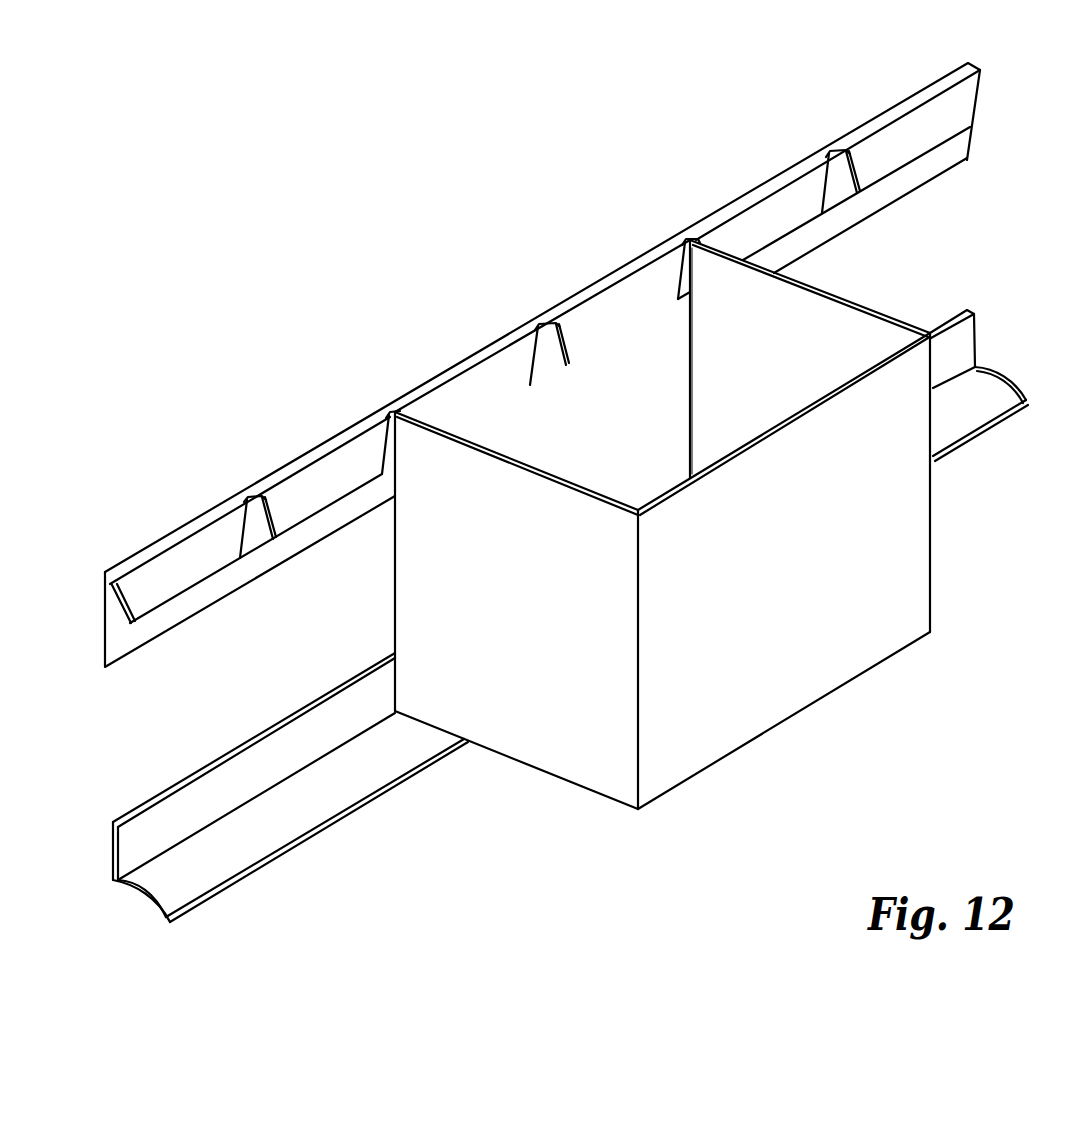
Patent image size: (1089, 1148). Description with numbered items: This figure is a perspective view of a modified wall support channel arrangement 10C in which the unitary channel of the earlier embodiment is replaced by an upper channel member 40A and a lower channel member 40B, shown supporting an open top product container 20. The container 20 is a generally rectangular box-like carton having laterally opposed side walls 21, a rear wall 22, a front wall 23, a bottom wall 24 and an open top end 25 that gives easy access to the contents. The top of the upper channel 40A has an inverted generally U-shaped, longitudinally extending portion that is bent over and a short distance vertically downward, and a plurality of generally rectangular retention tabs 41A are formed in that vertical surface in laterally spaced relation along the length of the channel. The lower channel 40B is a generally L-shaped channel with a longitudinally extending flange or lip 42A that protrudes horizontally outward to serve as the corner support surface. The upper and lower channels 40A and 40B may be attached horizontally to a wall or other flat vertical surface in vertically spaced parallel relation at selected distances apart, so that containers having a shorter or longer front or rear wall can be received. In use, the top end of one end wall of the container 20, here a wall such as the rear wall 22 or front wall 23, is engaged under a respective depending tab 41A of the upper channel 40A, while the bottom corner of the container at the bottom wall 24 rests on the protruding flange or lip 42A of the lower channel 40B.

The shelf rail assembly 10C is at (594, 176).
The product container 20 is at (952, 556).
The side walls 21 is at (515, 554).
The rear wall 22 is at (635, 453).
The front wall 23 is at (787, 618).
The bottom wall 24 is at (502, 756).
The open top end 25 is at (850, 332).
The upper channel member 40A is at (933, 180).
The lower channel member 40B is at (968, 348).
The retention tabs 41A is at (880, 178).
The flange or lip 42A is at (337, 820).